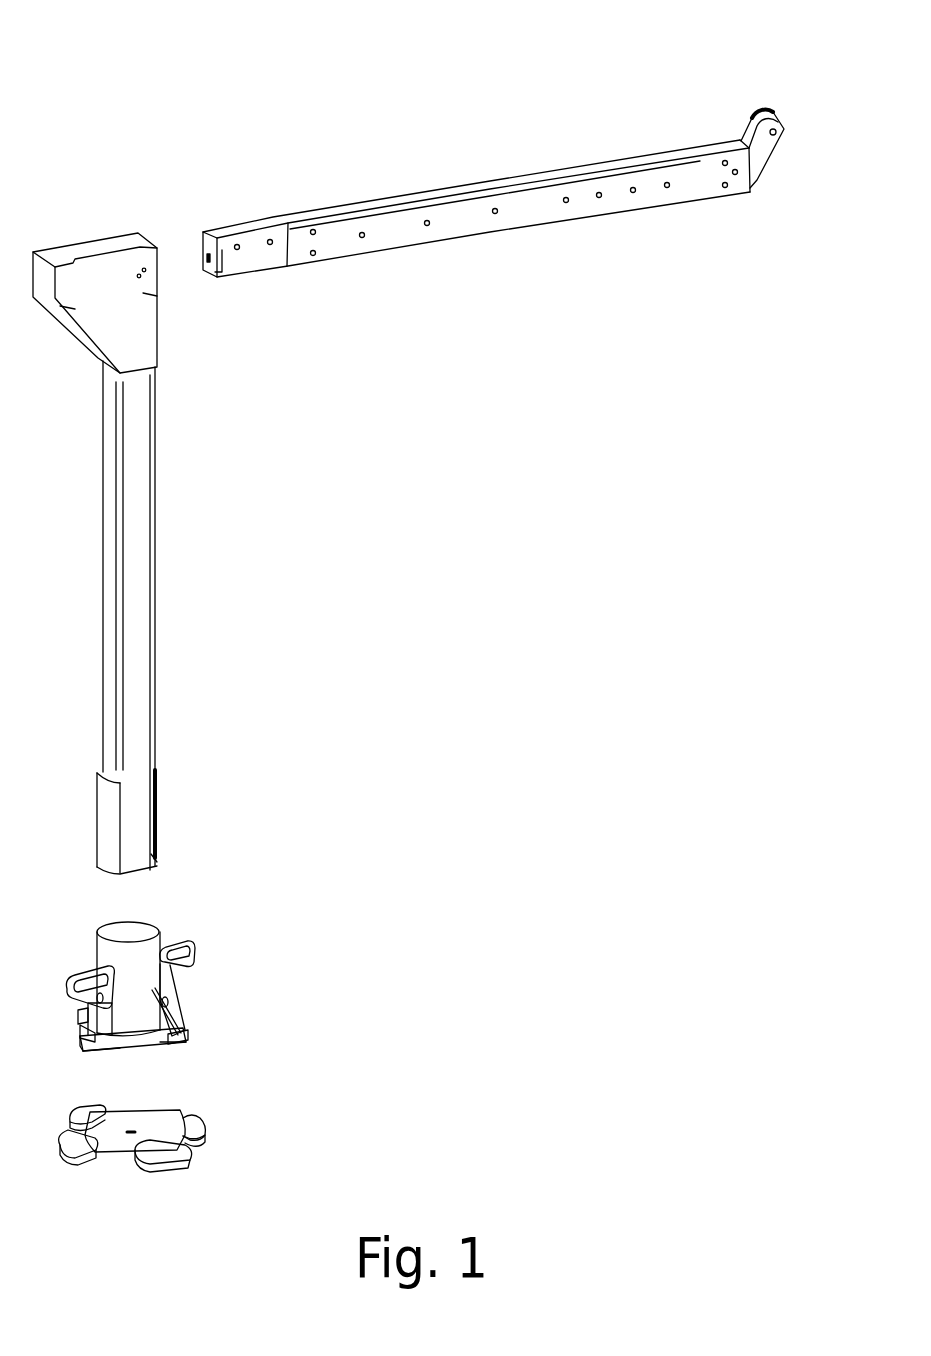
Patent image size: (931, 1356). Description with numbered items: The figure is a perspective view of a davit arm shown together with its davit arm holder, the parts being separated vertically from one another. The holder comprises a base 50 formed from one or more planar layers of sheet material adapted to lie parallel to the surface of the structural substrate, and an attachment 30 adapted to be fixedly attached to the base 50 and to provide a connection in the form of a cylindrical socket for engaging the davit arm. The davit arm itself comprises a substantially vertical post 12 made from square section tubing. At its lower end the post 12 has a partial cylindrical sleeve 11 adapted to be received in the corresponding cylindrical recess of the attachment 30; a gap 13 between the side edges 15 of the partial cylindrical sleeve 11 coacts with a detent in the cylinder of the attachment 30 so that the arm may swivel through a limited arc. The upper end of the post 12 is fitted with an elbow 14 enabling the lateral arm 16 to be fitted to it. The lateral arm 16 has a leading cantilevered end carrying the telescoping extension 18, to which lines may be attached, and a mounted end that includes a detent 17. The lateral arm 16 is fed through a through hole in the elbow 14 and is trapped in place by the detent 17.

The partial cylindrical sleeve 11 is at (160, 815).
The post 12 is at (140, 502).
The gap 13 is at (138, 792).
The elbow 14 is at (145, 333).
The side edges 15 is at (150, 855).
The lateral arm 16 is at (447, 200).
The detent 17 is at (747, 120).
The telescoping extension 18 is at (240, 222).
The attachment 30 is at (222, 985).
The base 50 is at (224, 1109).